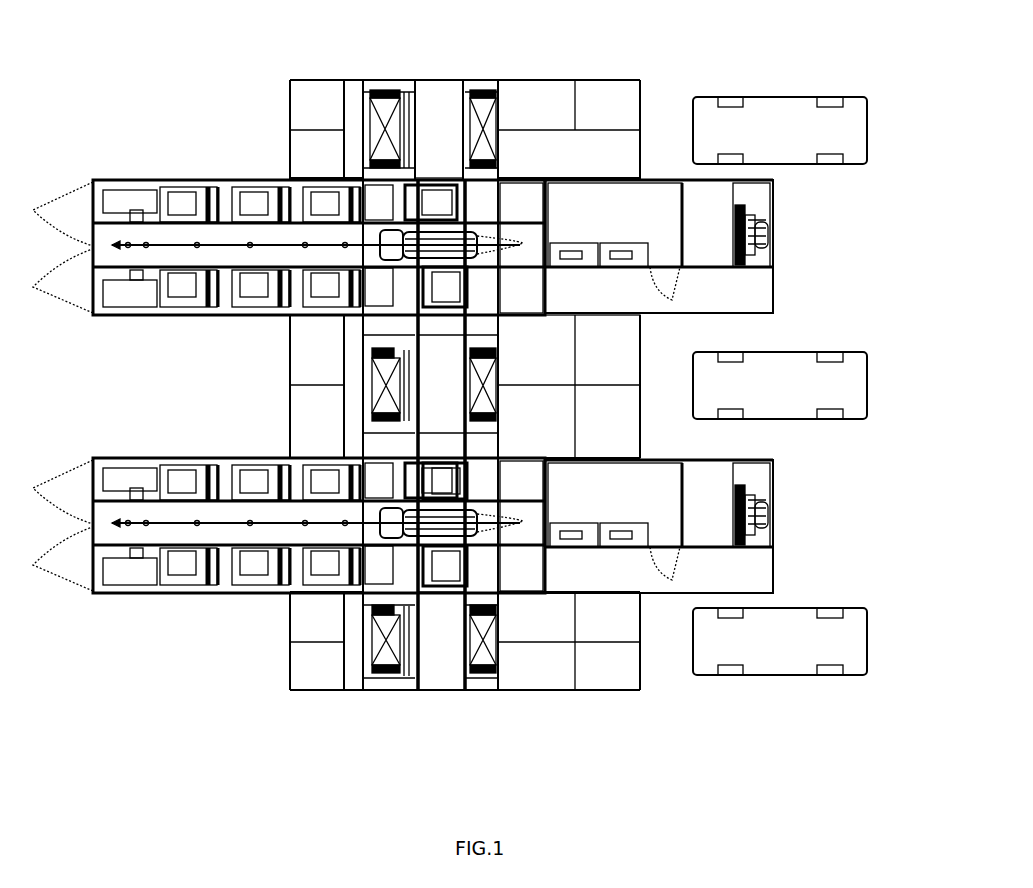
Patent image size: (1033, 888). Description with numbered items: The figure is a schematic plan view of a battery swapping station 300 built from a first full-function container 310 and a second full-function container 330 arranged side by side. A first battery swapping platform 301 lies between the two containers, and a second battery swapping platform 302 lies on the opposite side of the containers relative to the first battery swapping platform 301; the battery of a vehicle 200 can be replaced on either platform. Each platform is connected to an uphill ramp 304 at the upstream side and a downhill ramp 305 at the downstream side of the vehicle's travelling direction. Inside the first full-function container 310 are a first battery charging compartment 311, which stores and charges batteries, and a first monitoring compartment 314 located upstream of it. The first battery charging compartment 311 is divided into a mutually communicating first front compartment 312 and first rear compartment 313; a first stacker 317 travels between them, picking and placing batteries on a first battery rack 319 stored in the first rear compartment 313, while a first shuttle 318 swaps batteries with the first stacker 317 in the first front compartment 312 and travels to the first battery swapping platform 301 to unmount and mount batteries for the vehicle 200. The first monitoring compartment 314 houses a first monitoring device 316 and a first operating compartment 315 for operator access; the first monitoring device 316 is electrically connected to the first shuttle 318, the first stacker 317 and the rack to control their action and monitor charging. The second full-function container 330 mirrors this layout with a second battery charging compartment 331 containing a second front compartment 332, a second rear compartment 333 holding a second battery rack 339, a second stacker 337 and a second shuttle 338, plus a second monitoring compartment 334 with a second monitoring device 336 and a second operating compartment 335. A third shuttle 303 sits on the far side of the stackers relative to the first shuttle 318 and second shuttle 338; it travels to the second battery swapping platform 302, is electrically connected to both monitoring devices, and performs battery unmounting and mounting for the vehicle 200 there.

The battery swapping station 300 is at (125, 83).
The vehicle 200 is at (865, 122).
The first battery swapping platform 301 is at (437, 390).
The second battery swapping platform 302 is at (436, 110).
The third shuttle 303 is at (432, 203).
The uphill ramp 304 is at (602, 373).
The downhill ramp 305 is at (312, 388).
The first full-function container 310 is at (805, 242).
The first battery charging compartment 311 is at (245, 110).
The first front compartment 312 is at (348, 222).
The first rear compartment 313 is at (192, 232).
The first monitoring compartment 314 is at (720, 270).
The first operating compartment 315 is at (607, 207).
The first monitoring device 316 is at (767, 225).
The first stacker 317 is at (470, 232).
The first shuttle 318 is at (440, 280).
The first battery rack 319 is at (178, 300).
The second full-function container 330 is at (785, 522).
The second battery charging compartment 331 is at (248, 690).
The second front compartment 332 is at (372, 535).
The second rear compartment 333 is at (203, 540).
The second monitoring compartment 334 is at (735, 553).
The second operating compartment 335 is at (645, 485).
The second monitoring device 336 is at (755, 503).
The second stacker 337 is at (475, 537).
The second shuttle 338 is at (440, 482).
The second battery rack 339 is at (180, 480).